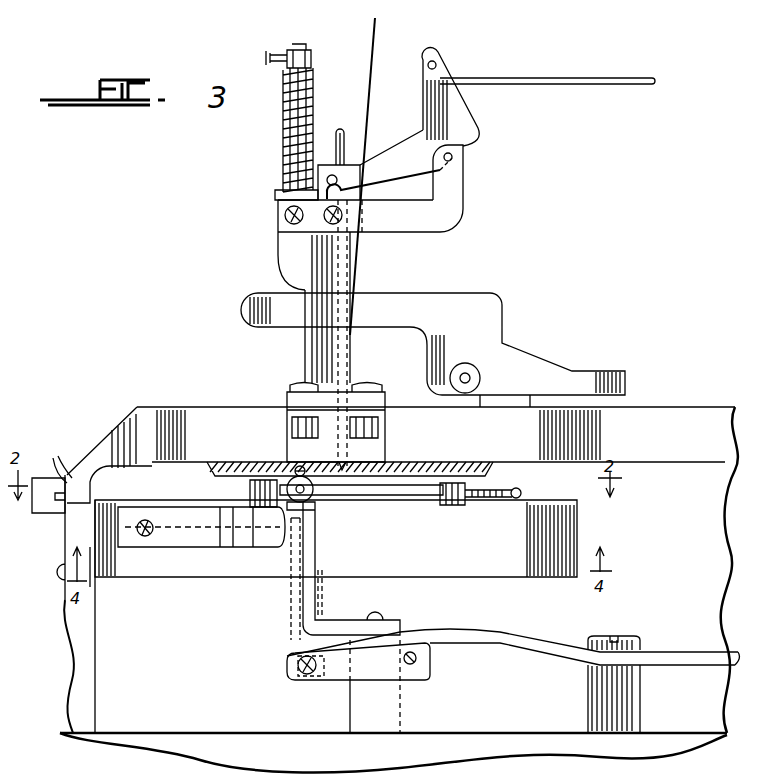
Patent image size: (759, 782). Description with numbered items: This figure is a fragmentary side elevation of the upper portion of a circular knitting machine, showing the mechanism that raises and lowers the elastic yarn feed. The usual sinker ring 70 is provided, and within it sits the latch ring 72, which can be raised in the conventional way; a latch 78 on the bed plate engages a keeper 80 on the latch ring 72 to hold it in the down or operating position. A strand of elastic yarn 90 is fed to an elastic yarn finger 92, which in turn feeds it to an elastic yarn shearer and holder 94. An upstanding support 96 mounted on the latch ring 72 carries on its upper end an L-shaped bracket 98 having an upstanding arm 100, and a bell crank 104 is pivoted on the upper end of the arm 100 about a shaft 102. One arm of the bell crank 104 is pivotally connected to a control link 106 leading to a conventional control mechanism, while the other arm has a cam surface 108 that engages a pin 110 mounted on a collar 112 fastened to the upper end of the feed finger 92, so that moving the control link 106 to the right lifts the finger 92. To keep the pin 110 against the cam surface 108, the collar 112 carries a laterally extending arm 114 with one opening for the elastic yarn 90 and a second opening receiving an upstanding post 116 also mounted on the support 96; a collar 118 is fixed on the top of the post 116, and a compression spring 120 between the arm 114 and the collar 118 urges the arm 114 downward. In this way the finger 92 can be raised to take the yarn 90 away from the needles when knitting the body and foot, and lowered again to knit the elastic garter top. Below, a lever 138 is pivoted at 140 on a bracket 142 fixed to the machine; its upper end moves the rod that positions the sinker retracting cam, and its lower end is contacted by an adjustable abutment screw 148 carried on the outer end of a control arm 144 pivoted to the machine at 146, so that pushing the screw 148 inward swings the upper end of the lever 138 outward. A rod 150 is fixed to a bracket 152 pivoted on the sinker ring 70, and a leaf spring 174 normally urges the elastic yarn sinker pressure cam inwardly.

The sinker ring 70 is at (134, 580).
The latch ring 72 is at (140, 425).
The latch 78 is at (68, 465).
The keeper 80 is at (55, 502).
The strand of elastic yarn 90 is at (378, 47).
The elastic yarn finger 92 is at (352, 280).
The elastic yarn shearer and holder 94 is at (486, 318).
The upstanding support 96 is at (314, 352).
The L-shaped bracket 98 is at (389, 222).
The upstanding arm 100 is at (463, 180).
The shaft 102 is at (453, 157).
The bell crank 104 is at (455, 117).
The control link 106 is at (612, 86).
The cam surface 108 is at (350, 178).
The pin 110 is at (326, 170).
The collar 112 is at (334, 175).
The laterally extending arm 114 is at (276, 196).
The upstanding post 116 is at (282, 92).
The collar 118 is at (306, 60).
The compression spring 120 is at (286, 156).
The lever 138 is at (314, 550).
The pivot 140 is at (300, 574).
The bracket 142 is at (320, 602).
The control arm 144 is at (500, 636).
The pivot 146 is at (622, 644).
The adjustable abutment screw 148 is at (290, 665).
The rod 150 is at (408, 500).
The bracket 152 is at (478, 488).
The leaf spring 174 is at (183, 542).